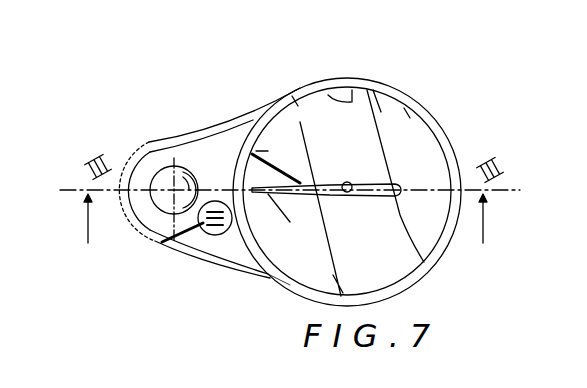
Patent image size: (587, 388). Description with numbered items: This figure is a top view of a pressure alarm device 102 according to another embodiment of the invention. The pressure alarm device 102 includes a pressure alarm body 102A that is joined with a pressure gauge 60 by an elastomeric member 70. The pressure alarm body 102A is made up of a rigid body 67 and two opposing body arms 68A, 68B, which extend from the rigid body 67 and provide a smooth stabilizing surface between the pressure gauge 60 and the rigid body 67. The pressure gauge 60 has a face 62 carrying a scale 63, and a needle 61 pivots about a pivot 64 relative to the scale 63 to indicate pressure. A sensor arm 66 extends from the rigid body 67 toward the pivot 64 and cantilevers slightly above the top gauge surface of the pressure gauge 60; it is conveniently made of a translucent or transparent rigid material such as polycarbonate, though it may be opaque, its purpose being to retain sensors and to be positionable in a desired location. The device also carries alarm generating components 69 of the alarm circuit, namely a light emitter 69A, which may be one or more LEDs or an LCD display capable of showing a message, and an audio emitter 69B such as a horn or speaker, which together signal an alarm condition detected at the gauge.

The pressure alarm device 102 is at (351, 78).
The pressure alarm body 102A is at (154, 138).
The pressure gauge 60 is at (404, 285).
The needle 61 is at (420, 259).
The face 62 is at (288, 281).
The scale 63 is at (326, 92).
The pivot 64 is at (347, 182).
The sensor arm 66 is at (290, 192).
The rigid body 67 is at (147, 150).
The body arm 68A is at (230, 122).
The body arm 68B is at (242, 256).
The alarm generating components 69 is at (170, 293).
The light emitter 69A is at (153, 207).
The audio emitter 69B is at (162, 242).
The elastomeric member 70 is at (168, 136).